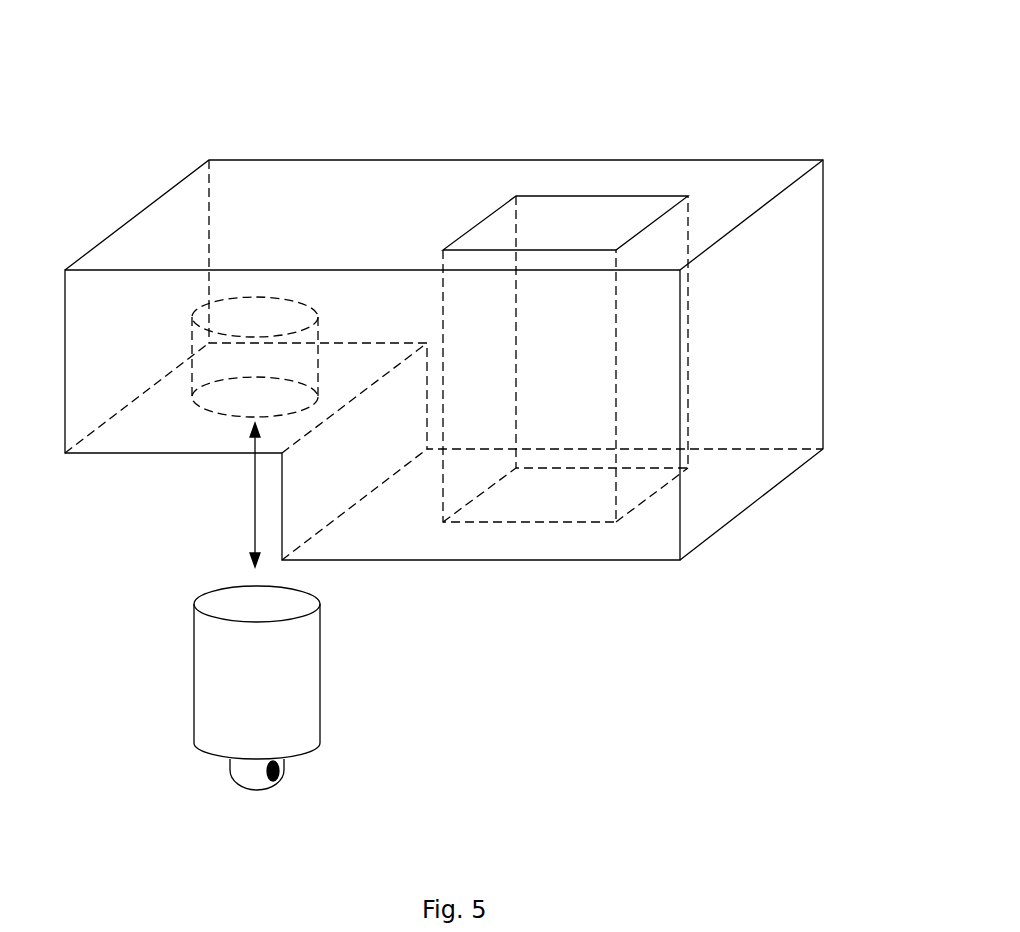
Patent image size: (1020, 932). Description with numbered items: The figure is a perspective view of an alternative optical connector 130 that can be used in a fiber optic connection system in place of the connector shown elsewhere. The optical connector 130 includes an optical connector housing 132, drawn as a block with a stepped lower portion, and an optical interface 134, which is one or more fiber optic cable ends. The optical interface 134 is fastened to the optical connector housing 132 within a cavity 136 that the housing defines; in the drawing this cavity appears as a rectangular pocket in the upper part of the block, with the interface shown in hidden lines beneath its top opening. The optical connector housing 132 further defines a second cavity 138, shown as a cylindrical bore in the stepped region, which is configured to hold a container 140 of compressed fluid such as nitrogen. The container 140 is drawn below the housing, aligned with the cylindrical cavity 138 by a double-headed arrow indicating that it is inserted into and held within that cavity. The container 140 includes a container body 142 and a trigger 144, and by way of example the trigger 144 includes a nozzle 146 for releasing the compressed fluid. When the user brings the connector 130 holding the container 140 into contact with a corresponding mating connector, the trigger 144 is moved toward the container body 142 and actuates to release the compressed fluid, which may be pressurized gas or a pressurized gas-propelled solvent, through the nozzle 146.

The optical connector 130 is at (814, 53).
The optical connector housing 132 is at (823, 385).
The optical interface 134 is at (546, 502).
The cavity 136 is at (553, 232).
The cavity 138 is at (214, 434).
The container 140 is at (157, 630).
The container body 142 is at (322, 667).
The trigger 144 is at (227, 767).
The nozzle 146 is at (255, 515).